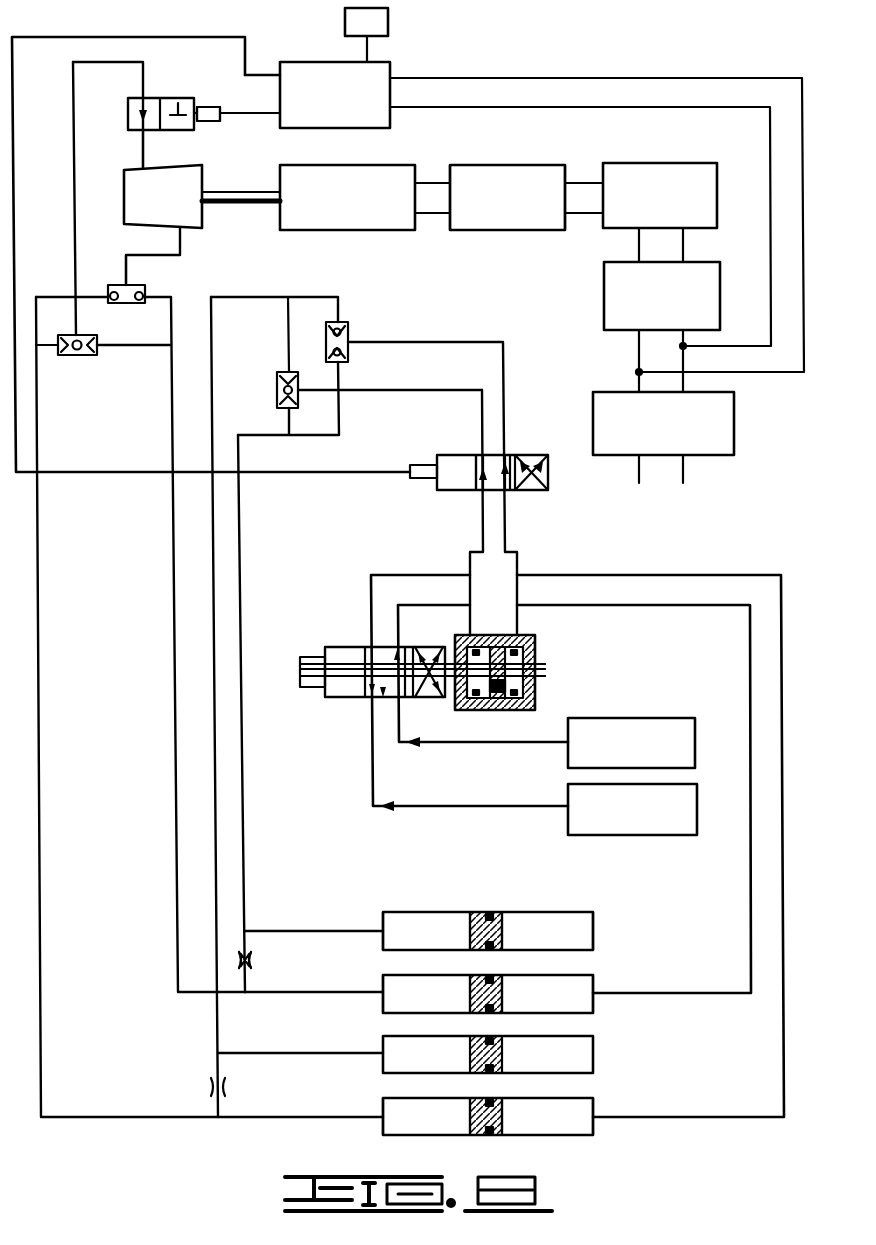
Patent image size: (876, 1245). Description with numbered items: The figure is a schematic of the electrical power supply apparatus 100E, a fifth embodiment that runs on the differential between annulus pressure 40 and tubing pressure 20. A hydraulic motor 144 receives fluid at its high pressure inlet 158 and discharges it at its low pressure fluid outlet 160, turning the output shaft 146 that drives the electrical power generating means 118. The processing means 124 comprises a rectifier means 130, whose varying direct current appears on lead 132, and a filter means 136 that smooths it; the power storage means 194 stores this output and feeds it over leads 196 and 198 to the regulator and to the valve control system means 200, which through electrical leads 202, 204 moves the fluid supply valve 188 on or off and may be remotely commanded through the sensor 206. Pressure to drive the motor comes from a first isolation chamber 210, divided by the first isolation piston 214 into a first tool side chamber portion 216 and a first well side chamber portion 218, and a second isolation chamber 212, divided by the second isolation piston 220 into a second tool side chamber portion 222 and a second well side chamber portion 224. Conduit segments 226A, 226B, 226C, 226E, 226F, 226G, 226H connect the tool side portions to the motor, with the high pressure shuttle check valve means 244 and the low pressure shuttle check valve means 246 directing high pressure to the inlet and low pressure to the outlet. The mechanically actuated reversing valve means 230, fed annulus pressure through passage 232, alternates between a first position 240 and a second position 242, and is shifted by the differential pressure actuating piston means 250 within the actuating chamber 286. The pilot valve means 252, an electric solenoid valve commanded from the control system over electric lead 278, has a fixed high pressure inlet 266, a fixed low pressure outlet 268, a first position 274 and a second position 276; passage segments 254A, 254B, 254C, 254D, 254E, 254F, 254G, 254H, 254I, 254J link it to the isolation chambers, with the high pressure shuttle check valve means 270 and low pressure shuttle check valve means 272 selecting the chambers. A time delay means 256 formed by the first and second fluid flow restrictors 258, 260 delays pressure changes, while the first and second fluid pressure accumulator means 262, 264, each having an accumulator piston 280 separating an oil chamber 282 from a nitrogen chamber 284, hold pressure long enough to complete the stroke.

The tubing pressure 20 is at (660, 836).
The annulus pressure 40 is at (668, 720).
The electrical power supply apparatus 100E is at (650, 62).
The electrical power generating means 118 is at (338, 166).
The processing means 124 is at (507, 197).
The rectifier means 130 is at (485, 167).
The lead 132 is at (722, 423).
The filter means 136 is at (638, 165).
The hydraulic motor 144 is at (170, 172).
The output shaft 146 is at (222, 192).
The high pressure inlet 158 is at (140, 166).
The low pressure fluid outlet 160 is at (188, 228).
The fluid supply valve 188 is at (160, 96).
The power storage means 194 is at (612, 272).
The lead 196 is at (596, 107).
The lead 198 is at (554, 78).
The valve control system means 200 is at (385, 78).
The electrical lead 202 is at (229, 122).
The electrical lead 204 is at (208, 114).
The sensor 206 is at (388, 30).
The first isolation chamber 210 is at (488, 1116).
The first tool side chamber portion 216 is at (408, 1136).
The first well side chamber portion 218 is at (575, 1136).
The first isolation piston 214 is at (470, 1136).
The second isolation chamber 212 is at (488, 994).
The second tool side chamber portion 222 is at (405, 976).
The second well side chamber portion 224 is at (582, 976).
The second isolation piston 220 is at (500, 976).
The conduit segment 226A is at (40, 716).
The conduit segment 226B is at (42, 360).
The conduit segment 226C is at (50, 296).
The conduit segment 226E is at (175, 620).
The conduit segment 226F is at (145, 343).
The conduit segment 226G is at (160, 297).
The conduit segment 226H is at (150, 255).
The reversing valve means 230 is at (333, 700).
The passage 232 is at (462, 744).
The first position 240 is at (385, 695).
The second position 242 is at (430, 697).
The high pressure shuttle check valve means 244 is at (92, 356).
The low pressure shuttle check valve means 246 is at (140, 285).
The differential pressure actuating piston means 250 is at (500, 660).
The pilot valve means 252 is at (462, 493).
The passage segment 254A is at (216, 1062).
The conduit portion 254B is at (218, 1013).
The passage segment 254C is at (288, 323).
The passage segment 254D is at (300, 296).
The passage segment 254E is at (412, 390).
The passage segment 254F is at (430, 342).
The passage segment 254G is at (285, 992).
The conduit segment 254H is at (245, 866).
The passage segment 254I is at (289, 420).
The passage segment 254J is at (341, 418).
The time delay means 256 is at (245, 960).
The first fluid flow restrictor 258 is at (228, 1088).
The second fluid flow restrictor 260 is at (252, 958).
The first fluid pressure accumulator means 262 is at (604, 1043).
The second fluid pressure accumulator means 264 is at (604, 917).
The fixed high pressure inlet 266 is at (481, 452).
The fixed low pressure outlet 268 is at (507, 452).
The high pressure shuttle check valve means 270 is at (279, 372).
The low pressure shuttle check valve means 272 is at (347, 325).
The first position 274 is at (492, 492).
The second position 276 is at (548, 472).
The electric lead 278 is at (118, 37).
The accumulator piston 280 is at (490, 912).
The oil chamber 282 is at (432, 912).
The nitrogen chamber 284 is at (543, 912).
The actuating chamber 286 is at (512, 694).